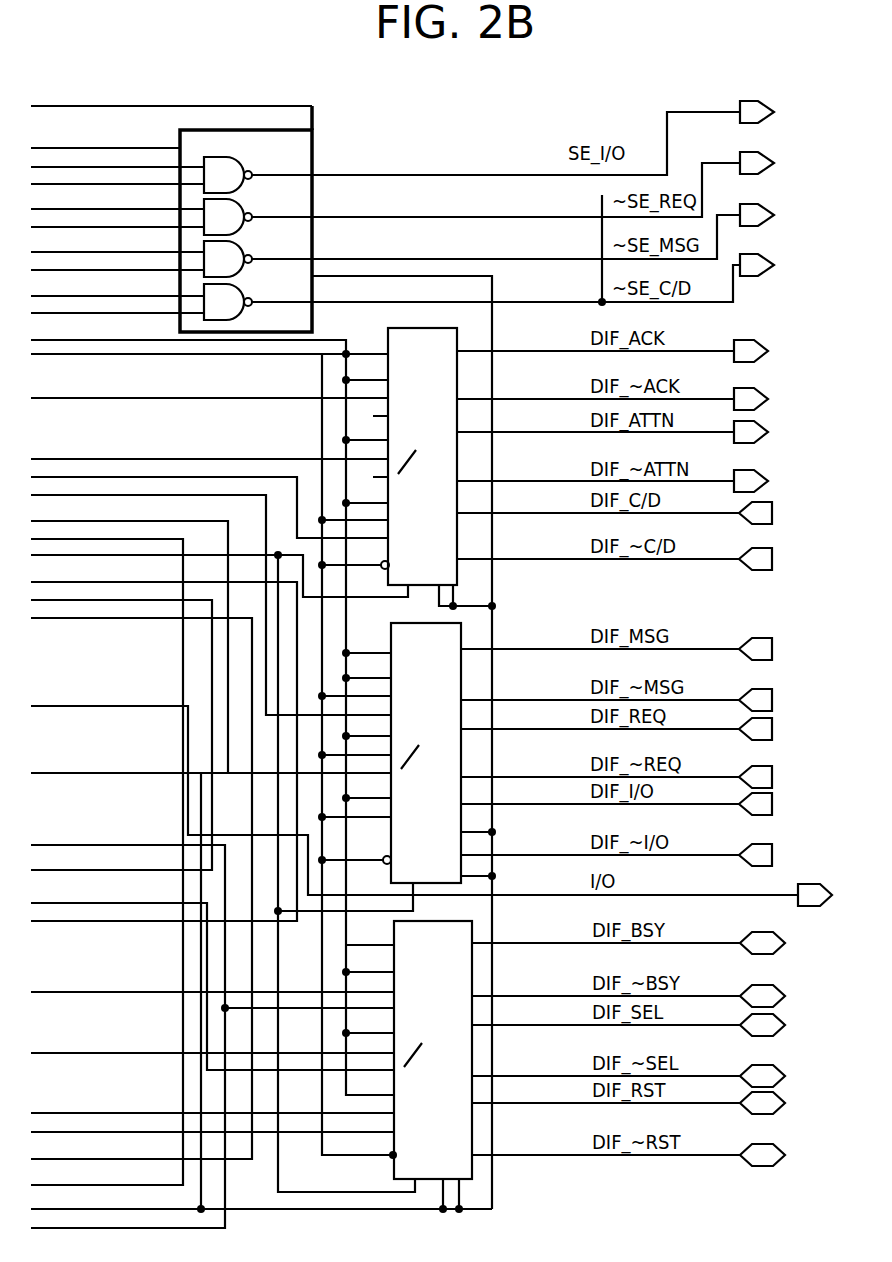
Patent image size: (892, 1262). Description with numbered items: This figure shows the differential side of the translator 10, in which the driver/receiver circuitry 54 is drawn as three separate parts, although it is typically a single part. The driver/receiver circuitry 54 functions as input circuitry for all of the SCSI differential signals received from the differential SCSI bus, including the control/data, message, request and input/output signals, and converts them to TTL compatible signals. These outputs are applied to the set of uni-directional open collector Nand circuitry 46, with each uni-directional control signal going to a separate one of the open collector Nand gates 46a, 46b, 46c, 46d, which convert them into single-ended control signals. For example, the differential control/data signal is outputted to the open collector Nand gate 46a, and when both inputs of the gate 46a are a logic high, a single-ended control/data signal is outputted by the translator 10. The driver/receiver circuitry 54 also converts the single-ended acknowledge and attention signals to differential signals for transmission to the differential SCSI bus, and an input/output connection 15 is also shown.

The uni-directional open collector Nand circuitry 46 is at (246, 197).
The open collector Nand gate 46a is at (240, 293).
The open collector Nand gate 46b is at (240, 250).
The open collector Nand gate 46c is at (240, 208).
The open collector Nand gate 46d is at (240, 166).
The driver/receiver circuitry 54 is at (458, 375).
The translator 10 is at (779, 634).
The I/O connector 15 is at (833, 896).